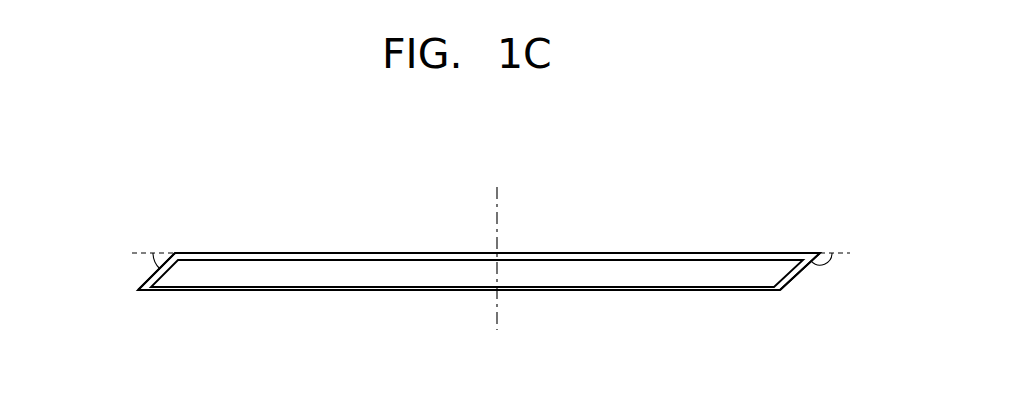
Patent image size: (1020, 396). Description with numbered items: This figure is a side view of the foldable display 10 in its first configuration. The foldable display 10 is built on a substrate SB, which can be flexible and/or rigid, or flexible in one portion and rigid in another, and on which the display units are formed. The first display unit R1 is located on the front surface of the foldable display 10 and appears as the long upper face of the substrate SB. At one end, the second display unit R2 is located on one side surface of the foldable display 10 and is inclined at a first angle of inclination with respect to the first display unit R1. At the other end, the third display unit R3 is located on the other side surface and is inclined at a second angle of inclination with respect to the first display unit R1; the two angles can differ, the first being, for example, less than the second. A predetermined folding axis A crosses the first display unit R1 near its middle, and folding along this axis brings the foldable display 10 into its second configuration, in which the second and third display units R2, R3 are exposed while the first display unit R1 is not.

The foldable display 10 is at (689, 216).
The substrate SB is at (654, 280).
The first display unit R1 is at (330, 253).
The second display unit R2 is at (150, 278).
The third display unit R3 is at (790, 282).
The folding axis A is at (497, 202).